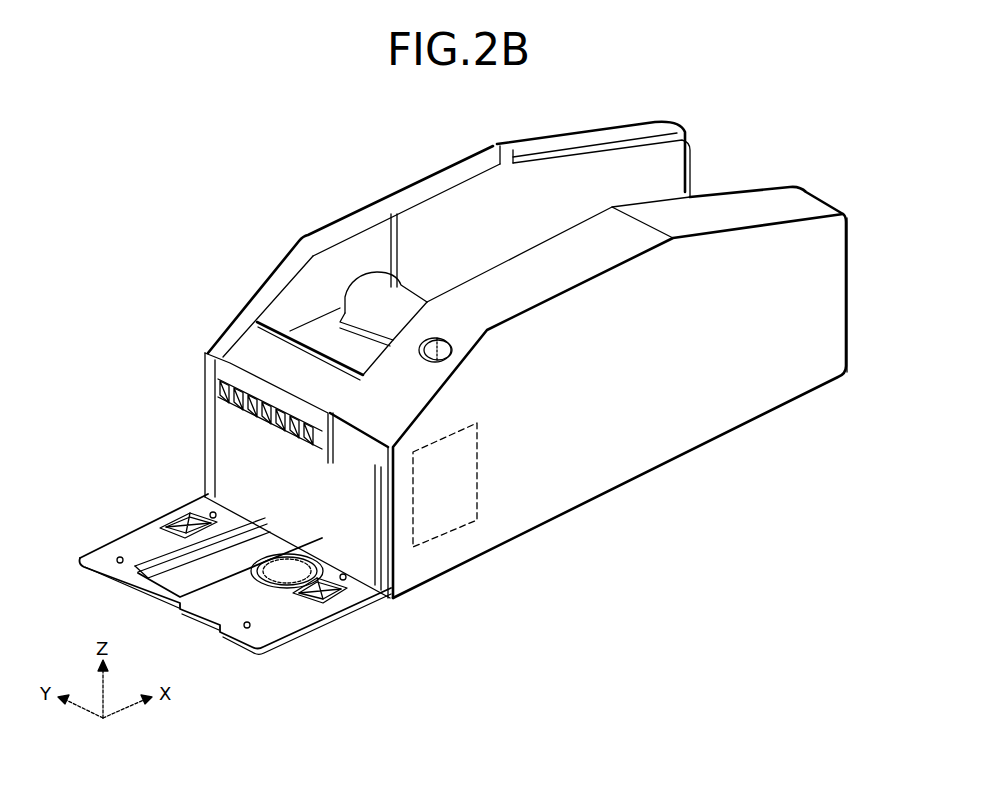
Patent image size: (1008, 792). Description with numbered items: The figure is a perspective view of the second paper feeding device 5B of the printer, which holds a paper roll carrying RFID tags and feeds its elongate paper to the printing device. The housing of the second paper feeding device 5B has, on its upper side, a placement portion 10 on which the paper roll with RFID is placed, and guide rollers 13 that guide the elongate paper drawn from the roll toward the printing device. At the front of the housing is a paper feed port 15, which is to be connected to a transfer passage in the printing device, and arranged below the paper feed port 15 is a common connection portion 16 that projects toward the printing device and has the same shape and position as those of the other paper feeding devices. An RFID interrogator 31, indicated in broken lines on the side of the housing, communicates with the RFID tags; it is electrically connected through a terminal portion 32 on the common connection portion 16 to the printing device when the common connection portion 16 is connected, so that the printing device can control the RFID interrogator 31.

The placement portion 10 is at (594, 180).
The guide rollers 13 is at (367, 297).
The paper feed port 15 is at (199, 384).
The common connection portion 16 is at (133, 548).
The RFID interrogator 31 is at (450, 527).
The terminal portion 32 is at (198, 557).
The second paper feeding device 5B is at (700, 441).